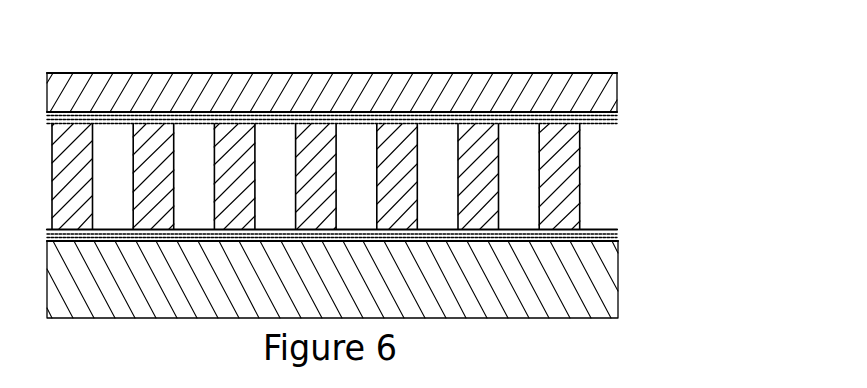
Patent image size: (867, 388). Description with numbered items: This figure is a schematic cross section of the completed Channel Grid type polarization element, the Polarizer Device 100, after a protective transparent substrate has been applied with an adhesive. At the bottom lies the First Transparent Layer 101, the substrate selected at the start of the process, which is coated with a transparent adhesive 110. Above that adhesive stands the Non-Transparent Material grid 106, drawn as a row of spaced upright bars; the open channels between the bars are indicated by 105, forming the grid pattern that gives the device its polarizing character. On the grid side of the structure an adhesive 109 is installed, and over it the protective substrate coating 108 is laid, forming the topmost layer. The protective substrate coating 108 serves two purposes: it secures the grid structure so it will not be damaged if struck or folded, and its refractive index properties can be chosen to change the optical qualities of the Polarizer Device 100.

The Polarizer Device 100 is at (495, 52).
The First Transparent Layer 101 is at (517, 293).
The air gap between pillars 105 is at (513, 162).
The Non-Transparent Material grid 106 is at (553, 187).
The protective substrate coating 108 is at (604, 77).
The adhesive 109 is at (607, 113).
The transparent adhesive 110 is at (573, 230).